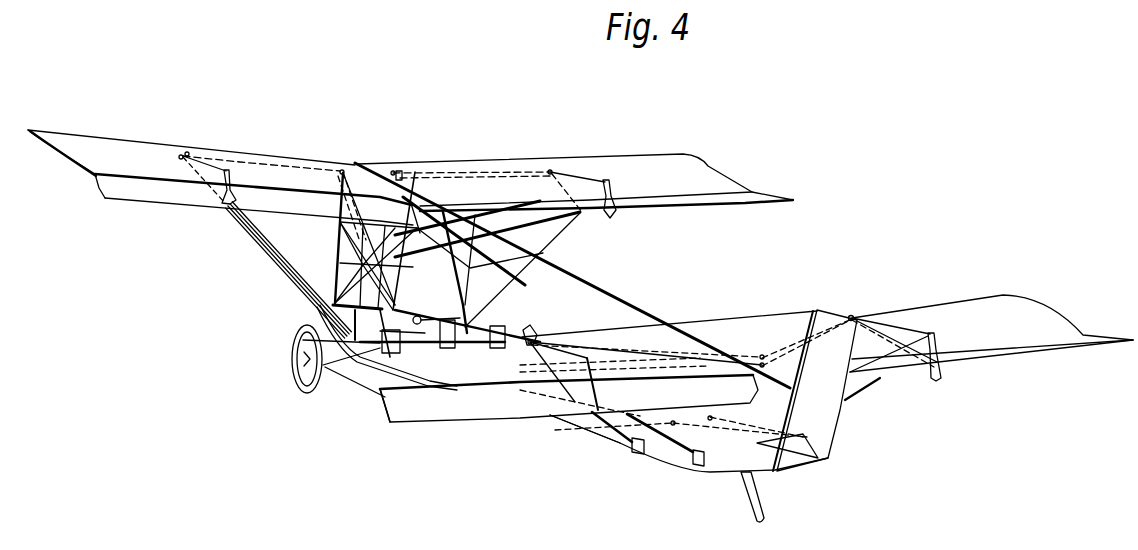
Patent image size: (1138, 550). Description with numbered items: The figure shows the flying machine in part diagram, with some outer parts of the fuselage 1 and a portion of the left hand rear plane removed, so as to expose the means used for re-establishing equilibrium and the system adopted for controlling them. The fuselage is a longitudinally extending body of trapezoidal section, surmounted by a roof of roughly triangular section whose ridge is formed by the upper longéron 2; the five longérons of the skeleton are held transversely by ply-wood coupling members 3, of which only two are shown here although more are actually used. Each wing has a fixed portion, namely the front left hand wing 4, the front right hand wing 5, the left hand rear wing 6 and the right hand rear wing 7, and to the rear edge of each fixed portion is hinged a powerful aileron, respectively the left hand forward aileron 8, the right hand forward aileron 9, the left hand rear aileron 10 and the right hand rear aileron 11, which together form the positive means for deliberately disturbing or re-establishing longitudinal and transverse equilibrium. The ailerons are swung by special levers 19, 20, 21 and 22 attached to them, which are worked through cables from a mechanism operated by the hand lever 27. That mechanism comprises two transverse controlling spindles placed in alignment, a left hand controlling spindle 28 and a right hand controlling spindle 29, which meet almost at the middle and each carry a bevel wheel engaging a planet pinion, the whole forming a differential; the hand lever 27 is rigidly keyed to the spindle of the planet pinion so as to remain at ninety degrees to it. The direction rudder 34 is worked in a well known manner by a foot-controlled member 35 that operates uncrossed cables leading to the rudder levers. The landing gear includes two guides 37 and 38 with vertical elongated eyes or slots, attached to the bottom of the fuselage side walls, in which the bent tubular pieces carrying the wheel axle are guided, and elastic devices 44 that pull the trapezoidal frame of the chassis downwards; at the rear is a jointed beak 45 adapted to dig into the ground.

The fuselage body 1 is at (556, 333).
The upper longéron 2 is at (507, 232).
The coupling member 3 is at (345, 237).
The fixed portion of front left hand wing 4 is at (165, 152).
The fixed portion of right hand front wing 5 is at (637, 170).
The fixed portion of left hand rear wing 6 is at (667, 340).
The fixed portion of right hand rear wing 7 is at (950, 313).
The aileron of left hand forward wing 8 is at (173, 199).
The aileron of right hand forward wing 9 is at (742, 200).
The aileron of left hand rear wing 10 is at (437, 410).
The aileron of right hand rear wing 11 is at (1085, 341).
The aileron lever 19 is at (232, 176).
The aileron lever 20 is at (614, 212).
The aileron lever 21 is at (570, 432).
The aileron lever 22 is at (944, 372).
The hand lever 27 is at (541, 263).
The left hand controlling spindle 28 is at (383, 388).
The right hand controlling spindle 29 is at (553, 328).
The rudder 34 is at (827, 393).
The foot-controlled member 35 is at (405, 318).
The guide 37 is at (300, 327).
The guide 38 is at (517, 294).
The elastic devices 44 is at (358, 366).
The tail skid 45 is at (762, 510).